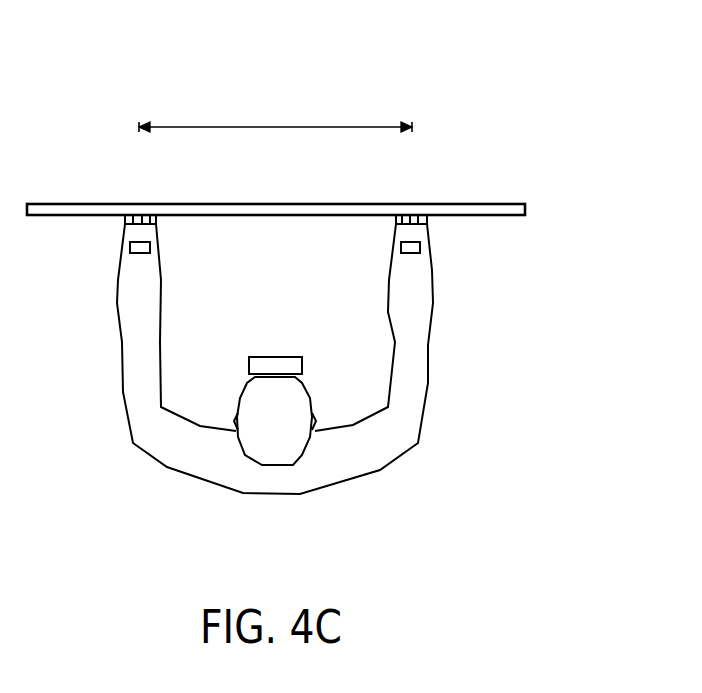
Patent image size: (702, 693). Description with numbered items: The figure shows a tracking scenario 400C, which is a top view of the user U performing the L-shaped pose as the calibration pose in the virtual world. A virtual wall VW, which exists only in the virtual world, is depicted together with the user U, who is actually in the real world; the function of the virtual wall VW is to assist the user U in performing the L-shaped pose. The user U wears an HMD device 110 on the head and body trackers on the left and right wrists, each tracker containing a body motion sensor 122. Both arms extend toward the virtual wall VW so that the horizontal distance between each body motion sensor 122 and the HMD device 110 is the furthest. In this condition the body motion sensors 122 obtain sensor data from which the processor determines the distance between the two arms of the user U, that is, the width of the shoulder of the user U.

The body motion sensor 122 is at (150, 244).
The HMD device 110 is at (302, 366).
The user U is at (313, 410).
The virtual wall VW is at (508, 210).
The tracking scenario 400C is at (582, 532).